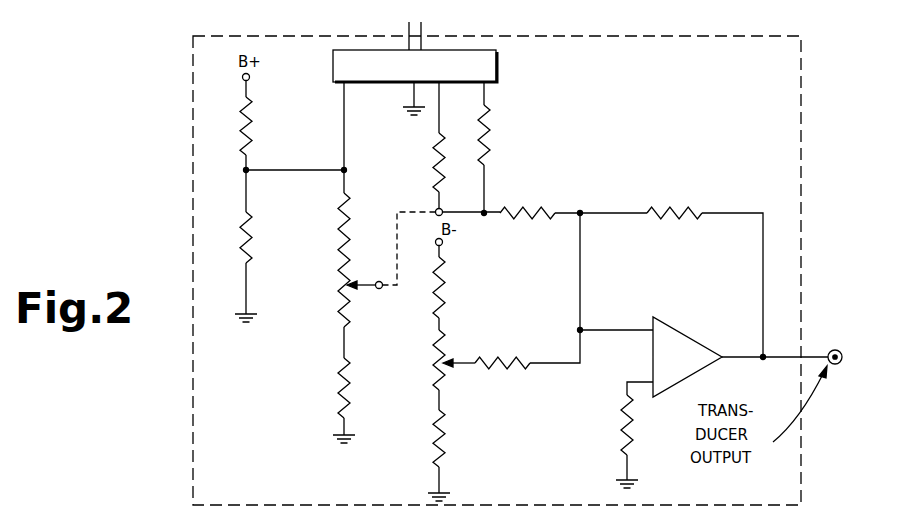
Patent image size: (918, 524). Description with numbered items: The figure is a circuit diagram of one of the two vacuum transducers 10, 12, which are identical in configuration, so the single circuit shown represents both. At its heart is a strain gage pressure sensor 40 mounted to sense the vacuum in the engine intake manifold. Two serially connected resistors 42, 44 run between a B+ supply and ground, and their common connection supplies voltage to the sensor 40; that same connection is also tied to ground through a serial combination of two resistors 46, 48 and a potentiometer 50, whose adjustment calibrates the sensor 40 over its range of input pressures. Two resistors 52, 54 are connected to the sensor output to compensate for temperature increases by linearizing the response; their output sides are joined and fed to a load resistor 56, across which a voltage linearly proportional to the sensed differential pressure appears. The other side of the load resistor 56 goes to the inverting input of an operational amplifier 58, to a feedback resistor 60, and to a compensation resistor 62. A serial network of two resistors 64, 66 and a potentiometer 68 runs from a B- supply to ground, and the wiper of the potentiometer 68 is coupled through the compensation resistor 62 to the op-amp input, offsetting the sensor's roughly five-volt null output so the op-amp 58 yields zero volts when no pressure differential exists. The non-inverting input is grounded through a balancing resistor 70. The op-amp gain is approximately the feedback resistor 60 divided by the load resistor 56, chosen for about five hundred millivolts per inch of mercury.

The vacuum transducer 10 is at (188, 115).
The vacuum transducer 12 is at (497, 270).
The strain gage pressure sensor 40 is at (498, 68).
The resistor 42 is at (253, 126).
The resistor 44 is at (253, 232).
The resistor 46 is at (351, 222).
The resistor 48 is at (351, 387).
The potentiometer 50 is at (342, 294).
The resistor 52 is at (491, 151).
The resistor 54 is at (435, 167).
The load resistor 56 is at (533, 209).
The operational amplifier 58 is at (686, 339).
The feedback resistor 60 is at (676, 209).
The compensation resistor 62 is at (507, 359).
The resistor 64 is at (446, 283).
The resistor 66 is at (447, 436).
The potentiometer 68 is at (433, 351).
The balancing resistor 70 is at (621, 426).